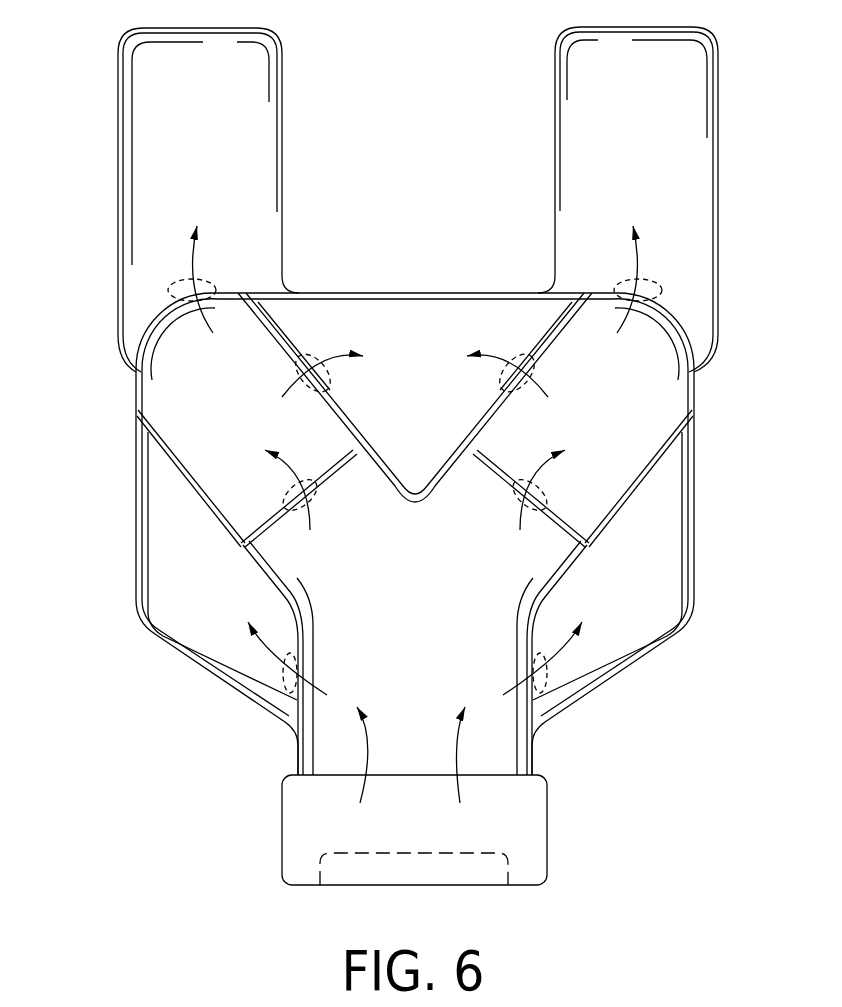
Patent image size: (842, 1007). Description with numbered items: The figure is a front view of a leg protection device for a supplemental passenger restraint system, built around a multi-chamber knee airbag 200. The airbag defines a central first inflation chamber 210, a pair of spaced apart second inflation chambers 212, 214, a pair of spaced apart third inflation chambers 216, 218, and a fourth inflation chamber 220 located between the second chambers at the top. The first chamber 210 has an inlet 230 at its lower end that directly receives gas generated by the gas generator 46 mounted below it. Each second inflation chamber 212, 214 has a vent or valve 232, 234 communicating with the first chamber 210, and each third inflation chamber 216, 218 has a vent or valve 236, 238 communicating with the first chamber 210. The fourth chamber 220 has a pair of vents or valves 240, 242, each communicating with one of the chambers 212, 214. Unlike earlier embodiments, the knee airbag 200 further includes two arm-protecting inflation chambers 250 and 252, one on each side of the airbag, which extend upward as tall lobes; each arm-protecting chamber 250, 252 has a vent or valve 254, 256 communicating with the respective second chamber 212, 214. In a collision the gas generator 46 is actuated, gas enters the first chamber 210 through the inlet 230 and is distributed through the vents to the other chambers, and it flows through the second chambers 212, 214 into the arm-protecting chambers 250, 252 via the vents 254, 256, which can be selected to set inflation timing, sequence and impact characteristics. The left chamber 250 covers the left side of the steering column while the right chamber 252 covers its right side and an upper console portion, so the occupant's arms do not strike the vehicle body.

The multi-chamber knee airbag 200 is at (90, 563).
The gas generator 46 is at (535, 823).
The first inflation chamber 210 is at (393, 601).
The second inflation chamber 212 is at (208, 418).
The second inflation chamber 214 is at (568, 418).
The third inflation chamber 216 is at (170, 591).
The third inflation chamber 218 is at (610, 586).
The fourth inflation chamber 220 is at (393, 396).
The inlet 230 is at (414, 785).
The vent or valve 232 is at (283, 488).
The vent or valve 234 is at (547, 488).
The vent or valve 236 is at (280, 680).
The vent or valve 238 is at (550, 680).
The vent or valve 240 is at (311, 352).
The vent or valve 242 is at (519, 352).
The arm-protecting inflation chamber 250 is at (267, 172).
The arm-protecting inflation chamber 252 is at (705, 172).
The vent or valve 254 is at (203, 278).
The vent or valve 256 is at (627, 278).